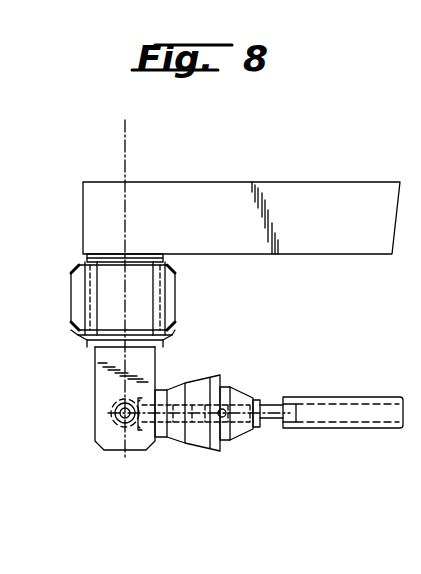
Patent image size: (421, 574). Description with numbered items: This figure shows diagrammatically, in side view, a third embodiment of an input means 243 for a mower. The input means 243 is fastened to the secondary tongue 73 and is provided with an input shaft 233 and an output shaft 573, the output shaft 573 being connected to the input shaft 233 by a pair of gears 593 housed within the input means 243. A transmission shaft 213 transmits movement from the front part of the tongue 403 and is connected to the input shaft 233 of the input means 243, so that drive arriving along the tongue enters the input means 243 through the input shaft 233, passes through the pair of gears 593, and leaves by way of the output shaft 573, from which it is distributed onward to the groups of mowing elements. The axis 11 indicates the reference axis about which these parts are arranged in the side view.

The axis 11 is at (125, 128).
The secondary tongue 73 is at (93, 193).
The front part of the tongue 403 is at (293, 178).
The pair of gears 593 is at (115, 404).
The output shaft 573 is at (113, 421).
The input means 243 is at (115, 452).
The input shaft 233 is at (174, 432).
The transmission shaft 213 is at (330, 397).